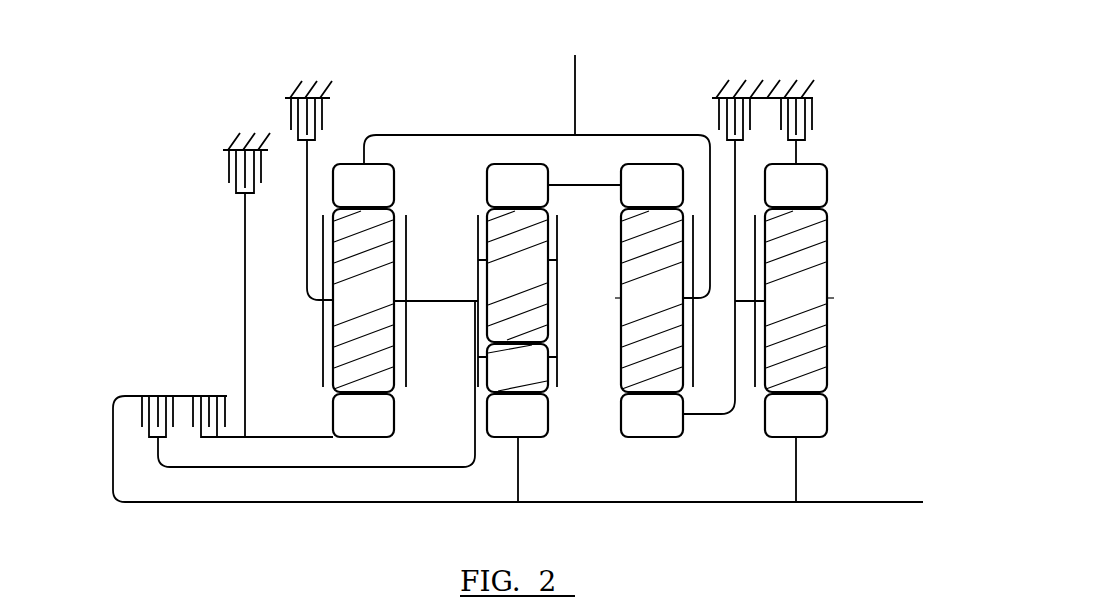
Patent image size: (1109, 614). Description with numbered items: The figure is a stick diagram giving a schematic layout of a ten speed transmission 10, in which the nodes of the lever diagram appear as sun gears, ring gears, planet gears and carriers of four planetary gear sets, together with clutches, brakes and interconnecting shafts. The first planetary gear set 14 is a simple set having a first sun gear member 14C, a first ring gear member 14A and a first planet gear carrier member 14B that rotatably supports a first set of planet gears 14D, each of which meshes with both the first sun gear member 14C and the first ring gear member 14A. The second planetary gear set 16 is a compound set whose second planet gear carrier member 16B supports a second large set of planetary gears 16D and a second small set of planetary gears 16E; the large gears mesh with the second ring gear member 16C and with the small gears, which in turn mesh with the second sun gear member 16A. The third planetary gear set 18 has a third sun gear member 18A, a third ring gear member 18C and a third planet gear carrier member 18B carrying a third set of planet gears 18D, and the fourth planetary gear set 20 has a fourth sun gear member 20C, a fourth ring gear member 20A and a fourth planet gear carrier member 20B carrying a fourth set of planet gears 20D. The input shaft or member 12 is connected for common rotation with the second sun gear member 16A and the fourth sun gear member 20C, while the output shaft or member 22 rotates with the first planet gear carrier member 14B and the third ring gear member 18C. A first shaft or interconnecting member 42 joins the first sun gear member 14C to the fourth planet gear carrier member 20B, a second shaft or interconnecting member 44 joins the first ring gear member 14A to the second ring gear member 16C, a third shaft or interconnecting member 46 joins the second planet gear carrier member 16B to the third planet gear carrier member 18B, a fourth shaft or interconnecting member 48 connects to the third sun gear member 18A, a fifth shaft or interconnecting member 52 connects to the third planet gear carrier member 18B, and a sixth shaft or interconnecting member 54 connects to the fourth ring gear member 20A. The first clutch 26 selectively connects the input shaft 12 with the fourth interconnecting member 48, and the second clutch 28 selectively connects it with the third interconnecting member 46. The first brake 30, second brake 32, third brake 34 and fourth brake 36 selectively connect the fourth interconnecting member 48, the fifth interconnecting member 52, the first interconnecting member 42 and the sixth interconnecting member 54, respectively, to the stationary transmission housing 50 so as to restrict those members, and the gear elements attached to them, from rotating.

The ten speed transmission 10 is at (849, 63).
The input shaft or member 12 is at (166, 504).
The first planetary gear set 14 is at (667, 333).
The first ring gear member 14A is at (672, 197).
The first planet gear carrier member 14B is at (693, 370).
The first sun gear member 14C is at (672, 427).
The first set of planet gears 14D is at (672, 308).
The second planetary gear set 16 is at (535, 360).
The second sun gear member 16A is at (538, 427).
The second planet gear carrier member 16B is at (542, 301).
The second ring gear member 16C is at (538, 197).
The second large set of planetary gears 16D is at (538, 279).
The second small set of planetary gears 16E is at (538, 377).
The third planetary gear set 18 is at (366, 360).
The third sun gear member 18A is at (384, 427).
The third planet gear carrier member 18B is at (407, 245).
The third ring gear member 18C is at (384, 197).
The third set of planet gears 18D is at (384, 308).
The fourth planetary gear set 20 is at (815, 360).
The fourth ring gear member 20A is at (816, 197).
The fourth planet gear carrier member 20B is at (768, 257).
The fourth sun gear member 20C is at (816, 427).
The fourth set of planet gears 20D is at (816, 308).
The output shaft or member 22 is at (578, 108).
The first clutch 26 is at (225, 414).
The second clutch 28 is at (140, 397).
The first brake 30 is at (229, 171).
The second brake 32 is at (291, 121).
The third brake 34 is at (719, 118).
The fourth brake 36 is at (812, 118).
The first shaft or interconnecting member 42 is at (706, 415).
The second shaft or interconnecting member 44 is at (587, 187).
The third shaft or interconnecting member 46 is at (435, 303).
The fourth shaft or interconnecting member 48 is at (277, 439).
The transmission housing 50 is at (236, 147).
The fifth shaft or interconnecting member 52 is at (307, 203).
The sixth shaft or interconnecting member 54 is at (796, 156).